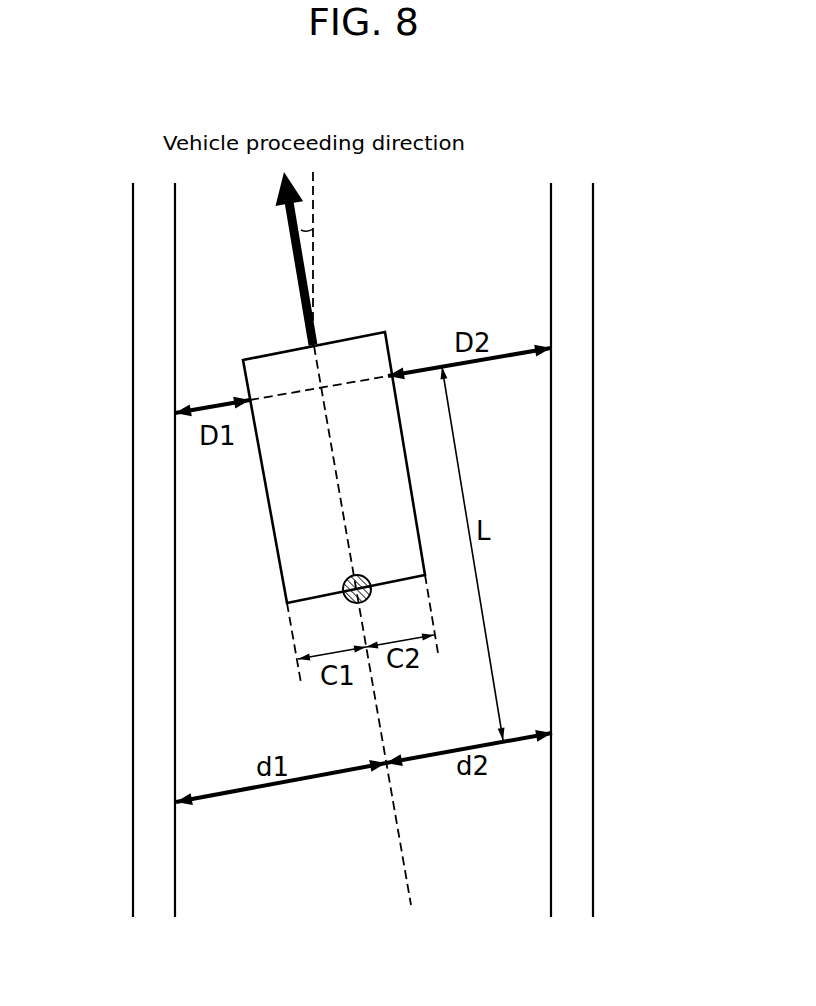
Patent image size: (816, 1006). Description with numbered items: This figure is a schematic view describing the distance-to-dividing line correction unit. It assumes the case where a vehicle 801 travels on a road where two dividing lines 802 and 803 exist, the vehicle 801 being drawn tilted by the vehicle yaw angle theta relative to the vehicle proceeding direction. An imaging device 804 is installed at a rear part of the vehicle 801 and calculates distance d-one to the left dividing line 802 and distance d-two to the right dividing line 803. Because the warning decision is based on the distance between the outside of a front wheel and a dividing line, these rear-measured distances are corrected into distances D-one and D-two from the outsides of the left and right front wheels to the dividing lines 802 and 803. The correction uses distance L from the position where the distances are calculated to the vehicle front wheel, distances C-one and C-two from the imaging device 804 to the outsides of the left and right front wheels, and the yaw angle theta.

The vehicle 801 is at (385, 332).
The dividing line 802 is at (133, 236).
The dividing line 803 is at (593, 234).
The imaging device 804 is at (343, 586).